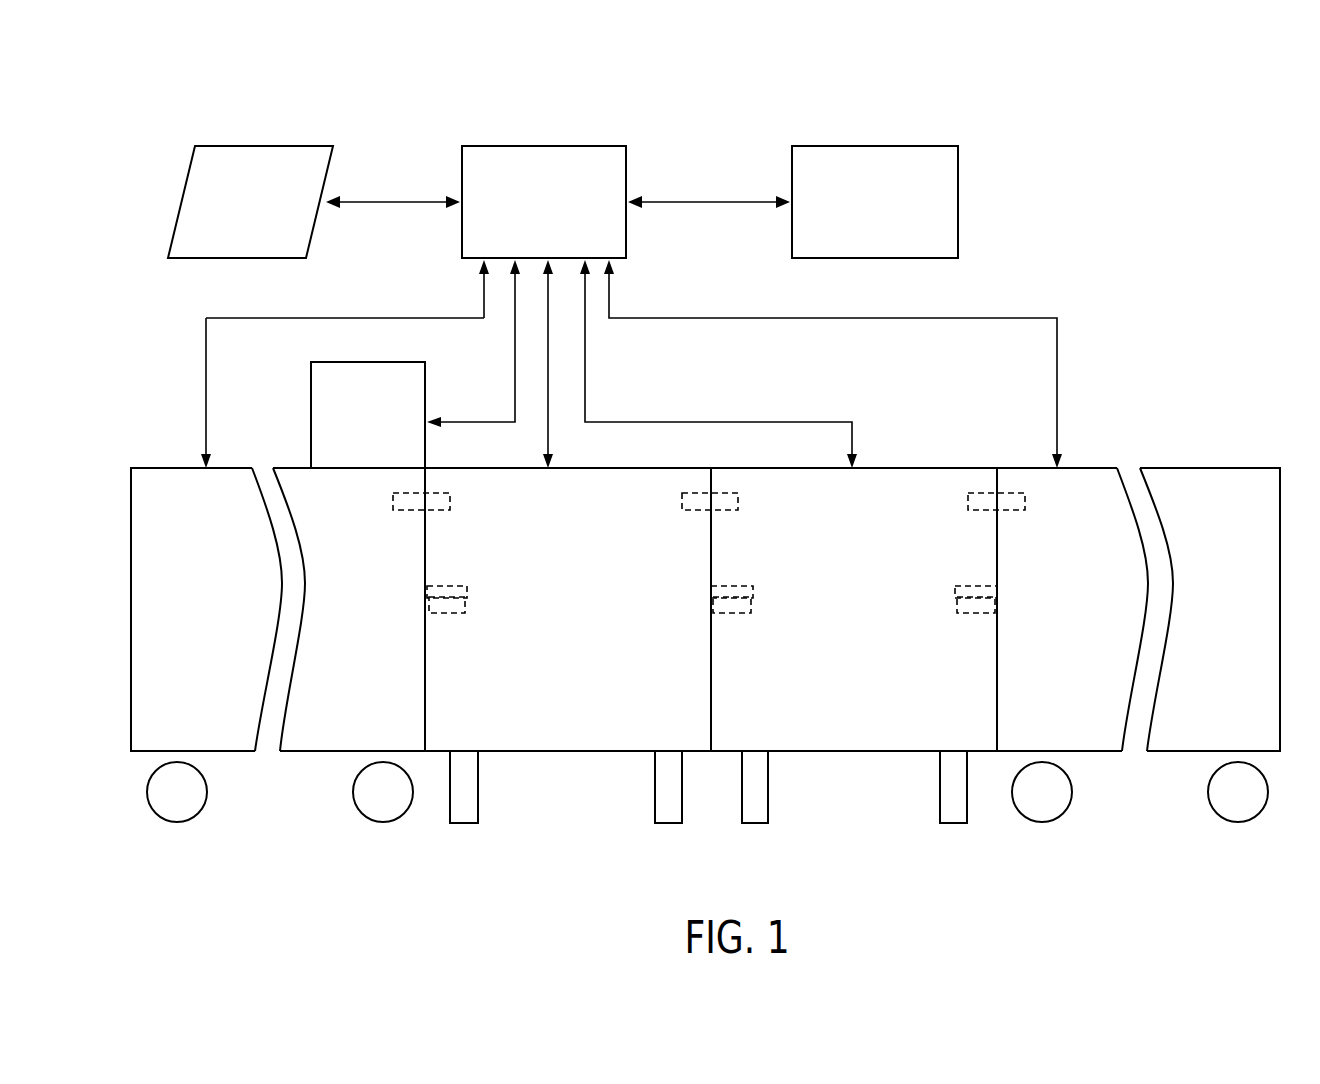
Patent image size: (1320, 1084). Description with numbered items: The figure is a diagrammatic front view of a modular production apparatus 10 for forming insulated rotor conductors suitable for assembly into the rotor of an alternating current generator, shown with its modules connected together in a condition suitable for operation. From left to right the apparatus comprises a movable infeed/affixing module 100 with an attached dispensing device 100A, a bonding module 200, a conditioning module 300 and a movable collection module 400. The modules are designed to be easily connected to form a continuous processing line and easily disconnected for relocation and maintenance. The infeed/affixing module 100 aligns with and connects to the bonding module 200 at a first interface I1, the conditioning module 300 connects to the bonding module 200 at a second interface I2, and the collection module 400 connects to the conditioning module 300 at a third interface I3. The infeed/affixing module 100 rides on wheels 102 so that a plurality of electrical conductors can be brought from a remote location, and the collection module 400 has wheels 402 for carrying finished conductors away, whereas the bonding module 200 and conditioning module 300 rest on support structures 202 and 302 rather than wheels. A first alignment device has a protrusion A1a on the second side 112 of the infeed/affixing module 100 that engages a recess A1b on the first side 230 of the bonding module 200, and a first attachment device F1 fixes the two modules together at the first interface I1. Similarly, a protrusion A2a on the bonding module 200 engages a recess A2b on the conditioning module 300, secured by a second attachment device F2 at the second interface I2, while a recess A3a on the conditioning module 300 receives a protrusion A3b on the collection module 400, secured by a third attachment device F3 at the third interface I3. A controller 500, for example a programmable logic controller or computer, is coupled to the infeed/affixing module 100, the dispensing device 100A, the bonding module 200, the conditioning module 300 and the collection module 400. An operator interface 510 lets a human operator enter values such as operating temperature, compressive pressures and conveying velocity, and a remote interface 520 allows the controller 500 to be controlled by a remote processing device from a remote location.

The modular production apparatus 10 is at (1234, 208).
The infeed/affixing module 100 is at (152, 467).
The dispensing device 100A is at (311, 399).
The wheels 102 is at (177, 822).
The second side 112 is at (425, 660).
The bonding module 200 is at (575, 752).
The support structures 202 is at (462, 824).
The first side 230 is at (425, 698).
The conditioning module 300 is at (850, 752).
The support structures 302 is at (755, 824).
The collection module 400 is at (1215, 467).
The wheels 402 is at (1042, 822).
The controller 500 is at (548, 145).
The operator interface 510 is at (255, 145).
The remote interface 520 is at (878, 145).
The first attachment device F1 is at (452, 504).
The second attachment device F2 is at (740, 504).
The third attachment device F3 is at (1027, 504).
The first portion of first alignment device A1a is at (447, 583).
The second portion of first alignment device A1b is at (468, 600).
The first portion of second alignment device A2a is at (735, 583).
The second portion of second alignment device A2b is at (753, 600).
The first portion of third alignment device A3a is at (953, 601).
The second portion of third alignment device A3b is at (980, 584).
The first interface I1 is at (425, 751).
The second interface I2 is at (711, 751).
The third interface I3 is at (997, 751).